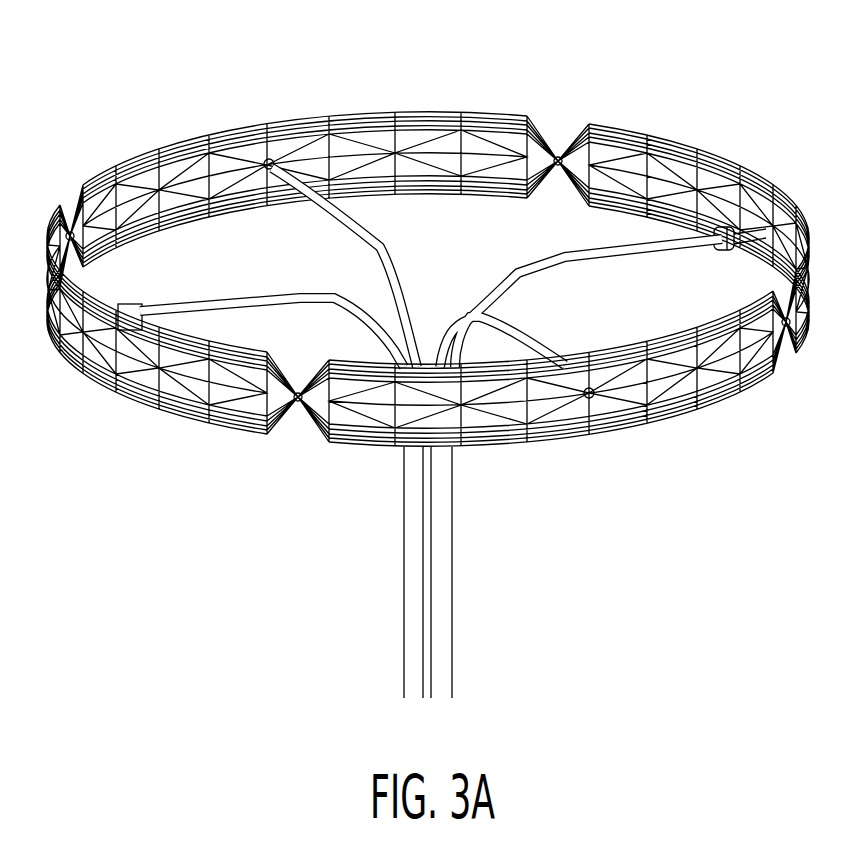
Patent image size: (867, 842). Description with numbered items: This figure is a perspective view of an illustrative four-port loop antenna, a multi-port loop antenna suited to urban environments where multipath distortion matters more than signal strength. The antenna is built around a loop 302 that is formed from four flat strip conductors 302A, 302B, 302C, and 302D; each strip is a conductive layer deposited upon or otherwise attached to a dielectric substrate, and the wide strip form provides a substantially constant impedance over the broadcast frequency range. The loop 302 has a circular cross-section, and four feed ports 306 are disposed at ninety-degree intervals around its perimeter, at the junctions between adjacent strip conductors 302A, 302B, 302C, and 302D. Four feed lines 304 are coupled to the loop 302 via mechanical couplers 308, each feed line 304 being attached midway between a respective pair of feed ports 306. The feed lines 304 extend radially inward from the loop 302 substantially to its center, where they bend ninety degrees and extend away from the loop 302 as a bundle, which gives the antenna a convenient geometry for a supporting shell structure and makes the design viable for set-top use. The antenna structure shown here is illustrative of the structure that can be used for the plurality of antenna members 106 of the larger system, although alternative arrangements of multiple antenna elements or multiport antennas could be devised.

The loop 302 is at (428, 250).
The flat strip conductor 302A is at (497, 148).
The flat strip conductor 302B is at (711, 152).
The flat strip conductor 302C is at (629, 428).
The flat strip conductor 302D is at (140, 399).
The feed line 304 is at (388, 247).
The feed port 306 is at (564, 148).
The mechanical coupler 308 is at (290, 116).
The antenna member 106 is at (288, 616).